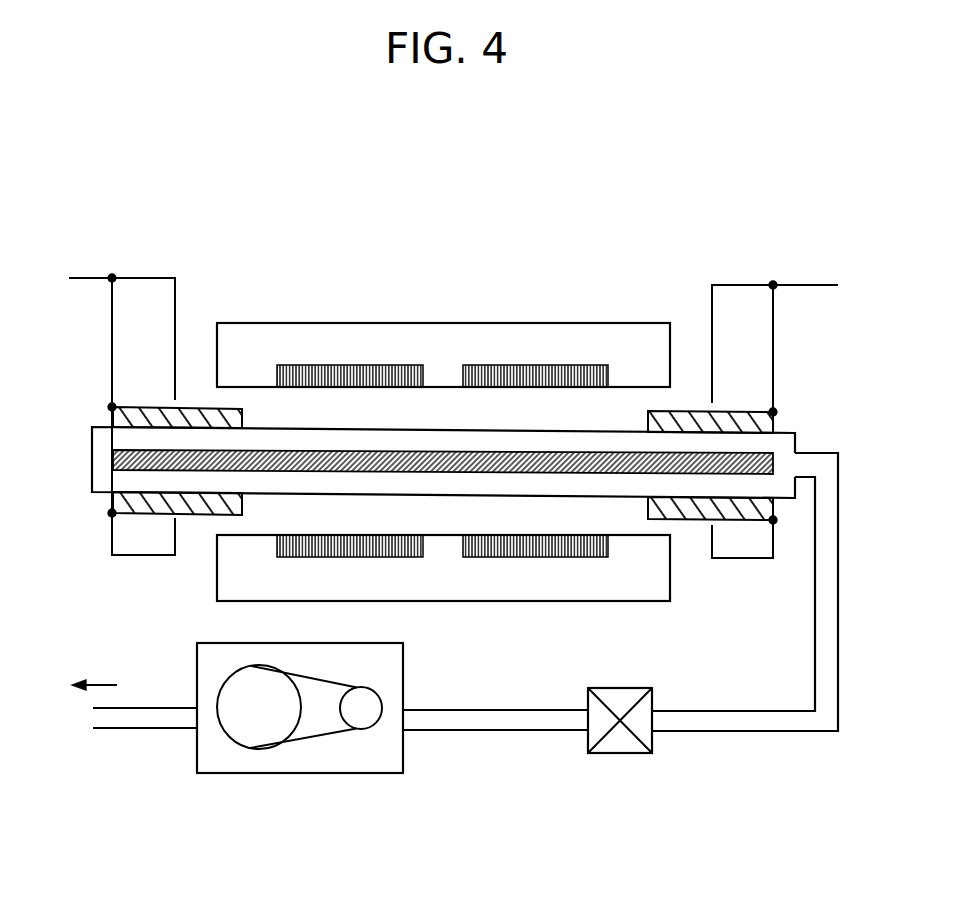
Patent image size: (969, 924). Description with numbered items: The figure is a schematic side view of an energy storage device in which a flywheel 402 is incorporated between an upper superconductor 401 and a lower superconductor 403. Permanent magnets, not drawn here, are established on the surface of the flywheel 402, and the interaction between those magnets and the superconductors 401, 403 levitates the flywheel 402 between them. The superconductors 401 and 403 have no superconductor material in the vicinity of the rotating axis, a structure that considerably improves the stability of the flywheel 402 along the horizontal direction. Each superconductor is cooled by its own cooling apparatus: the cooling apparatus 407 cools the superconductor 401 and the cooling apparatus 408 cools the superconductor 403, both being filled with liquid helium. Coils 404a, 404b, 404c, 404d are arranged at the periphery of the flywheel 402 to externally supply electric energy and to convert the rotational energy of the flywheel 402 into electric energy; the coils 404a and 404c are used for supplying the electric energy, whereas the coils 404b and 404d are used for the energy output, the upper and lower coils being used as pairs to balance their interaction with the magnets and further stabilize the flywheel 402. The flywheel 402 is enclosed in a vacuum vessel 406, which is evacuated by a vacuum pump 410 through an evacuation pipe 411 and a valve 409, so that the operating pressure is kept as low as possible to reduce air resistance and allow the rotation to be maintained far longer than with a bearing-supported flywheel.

The superconductor 401 is at (510, 365).
The flywheel 402 is at (632, 453).
The superconductor 403 is at (553, 557).
The coil 404a is at (160, 407).
The coil 404b is at (740, 412).
The coil 404c is at (157, 516).
The coil 404d is at (698, 520).
The vacuum vessel 406 is at (269, 431).
The cooling apparatus 407 is at (398, 323).
The cooling apparatus 408 is at (475, 601).
The valve 409 is at (622, 753).
The vacuum pump 410 is at (290, 773).
The evacuation pipe 411 is at (738, 733).